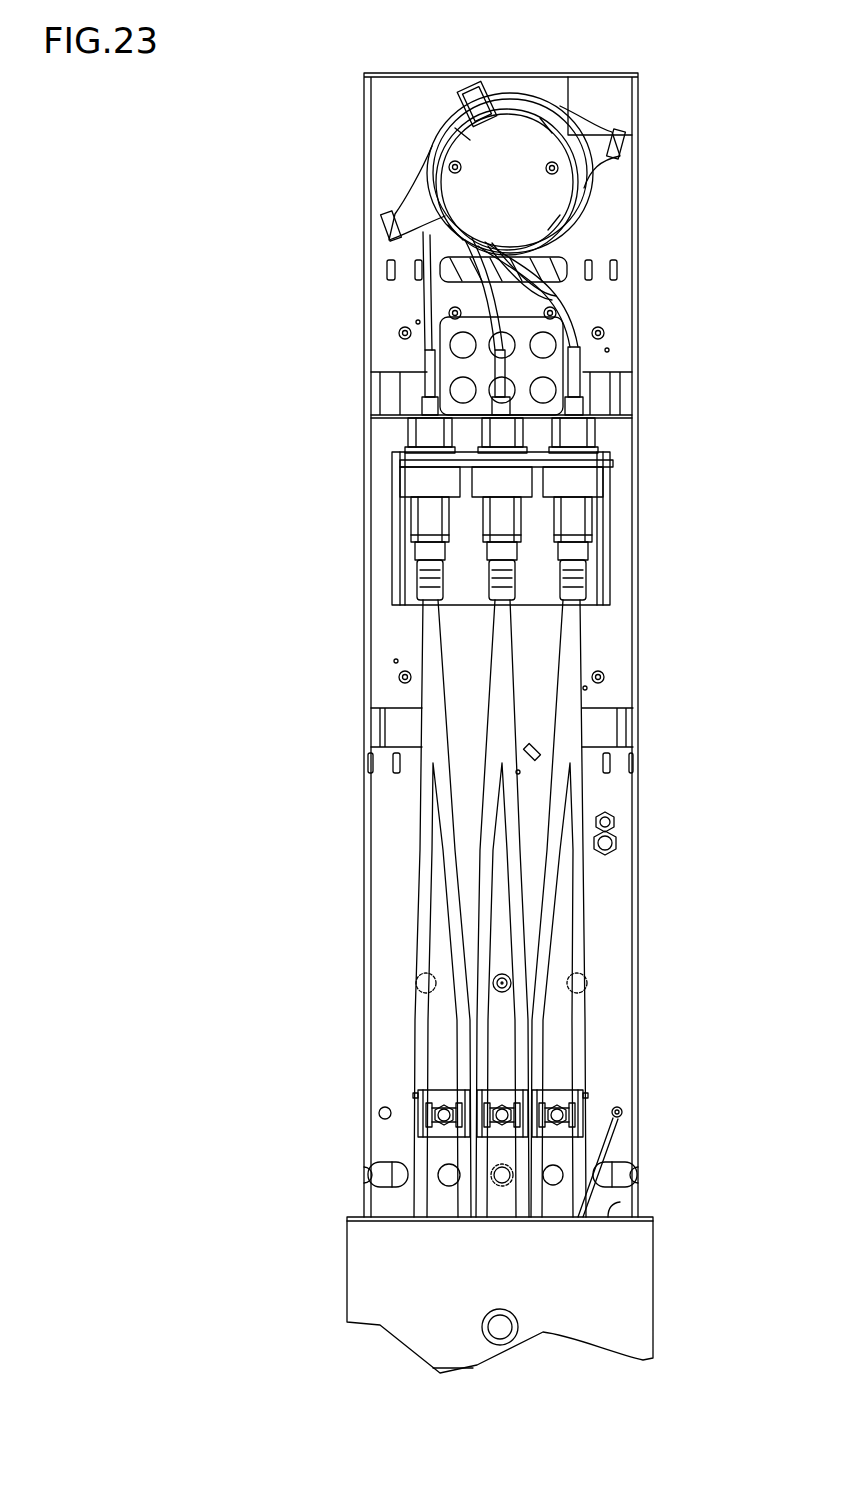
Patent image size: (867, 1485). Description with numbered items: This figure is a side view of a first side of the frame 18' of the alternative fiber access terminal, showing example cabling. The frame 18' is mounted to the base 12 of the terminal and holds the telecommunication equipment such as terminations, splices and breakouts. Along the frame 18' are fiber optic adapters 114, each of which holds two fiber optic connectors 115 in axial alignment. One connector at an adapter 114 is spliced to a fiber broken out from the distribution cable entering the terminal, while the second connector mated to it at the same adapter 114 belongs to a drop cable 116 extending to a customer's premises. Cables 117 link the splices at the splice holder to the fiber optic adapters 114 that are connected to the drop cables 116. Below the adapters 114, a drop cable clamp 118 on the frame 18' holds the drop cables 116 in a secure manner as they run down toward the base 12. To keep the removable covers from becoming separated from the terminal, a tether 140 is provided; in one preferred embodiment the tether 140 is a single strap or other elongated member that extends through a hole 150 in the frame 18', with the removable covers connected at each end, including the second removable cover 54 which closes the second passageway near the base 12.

The base 12 is at (654, 1287).
The frame 18' is at (548, 645).
The second removable cover 54 is at (625, 1201).
The fiber optic adapters 114 is at (540, 465).
The fiber optic connectors 115 is at (577, 407).
The drop cables 116 is at (553, 897).
The cables 117 is at (552, 300).
The drop cable clamp 118 is at (582, 1115).
The tether 140 is at (597, 1148).
The hole 150 is at (622, 1112).